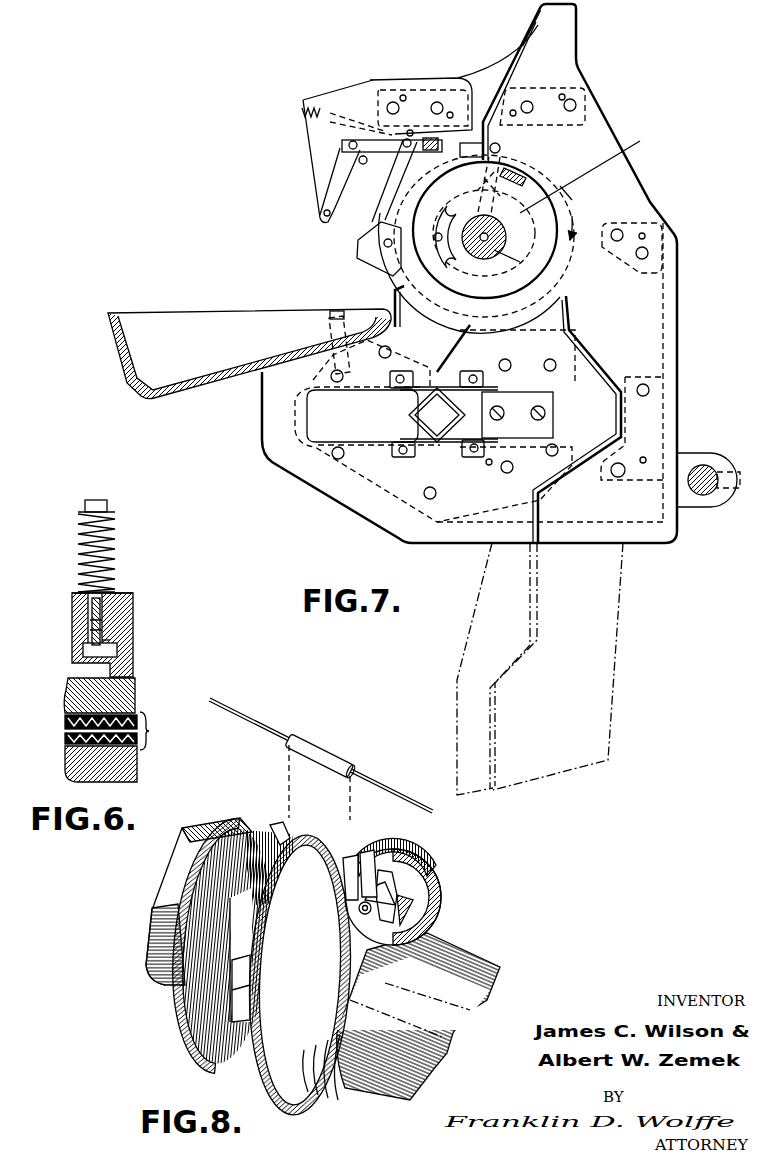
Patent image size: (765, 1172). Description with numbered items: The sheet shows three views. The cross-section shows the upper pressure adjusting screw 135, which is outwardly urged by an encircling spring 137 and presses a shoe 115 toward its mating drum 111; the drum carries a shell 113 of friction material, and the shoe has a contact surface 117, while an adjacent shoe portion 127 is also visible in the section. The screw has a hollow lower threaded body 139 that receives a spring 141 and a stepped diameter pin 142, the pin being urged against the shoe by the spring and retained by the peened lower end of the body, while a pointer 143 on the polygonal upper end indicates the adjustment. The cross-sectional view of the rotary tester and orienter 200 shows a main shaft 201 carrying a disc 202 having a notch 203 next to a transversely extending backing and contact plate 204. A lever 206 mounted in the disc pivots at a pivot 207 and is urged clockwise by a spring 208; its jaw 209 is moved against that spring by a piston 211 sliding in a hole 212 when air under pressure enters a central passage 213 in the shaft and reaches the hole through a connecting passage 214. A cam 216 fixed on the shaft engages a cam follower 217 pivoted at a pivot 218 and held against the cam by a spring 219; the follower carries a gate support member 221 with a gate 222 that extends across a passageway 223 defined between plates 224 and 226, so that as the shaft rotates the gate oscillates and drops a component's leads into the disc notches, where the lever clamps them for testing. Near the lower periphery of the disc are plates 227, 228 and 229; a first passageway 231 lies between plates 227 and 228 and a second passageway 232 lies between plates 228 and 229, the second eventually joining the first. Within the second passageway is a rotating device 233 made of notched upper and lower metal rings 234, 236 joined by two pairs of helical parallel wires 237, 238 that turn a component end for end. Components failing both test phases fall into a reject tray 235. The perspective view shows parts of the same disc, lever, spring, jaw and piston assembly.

In FIG. 6, the drum 111 is at (68, 766).
In FIG. 6, the shell 113 is at (66, 740).
In FIG. 6, the shoe 115 is at (64, 694).
In FIG. 6, the contact surface 117 is at (66, 720).
In FIG. 6, the housing 127 is at (72, 638).
In FIG. 6, the upper pressure adjusting screw 135 is at (70, 563).
In FIG. 6, the spring 137 is at (113, 567).
In FIG. 6, the threaded body 139 is at (102, 622).
In FIG. 6, the spring 141 is at (103, 608).
In FIG. 6, the stepped diameter pin 142 is at (110, 640).
In FIG. 6, the pointer 143 is at (122, 592).
In FIG. 7, the tester and orienter 200 is at (292, 133).
In FIG. 7, the main shaft 201 is at (507, 244).
In FIG. 8, the main shaft 201 is at (183, 860).
In FIG. 7, the disc 202 is at (593, 216).
In FIG. 8, the disc 202 is at (205, 985).
In FIG. 7, the notch 203 is at (490, 134).
In FIG. 8, the notch 203 is at (370, 860).
In FIG. 7, the backing and contact plate 204 is at (440, 136).
In FIG. 8, the backing and contact plate 204 is at (280, 828).
In FIG. 7, the lever 206 is at (497, 163).
In FIG. 8, the lever 206 is at (378, 915).
In FIG. 7, the pivot 207 is at (388, 172).
In FIG. 8, the pivot 207 is at (356, 940).
In FIG. 7, the spring 208 is at (510, 170).
In FIG. 8, the spring 208 is at (427, 923).
In FIG. 7, the jaw 209 is at (502, 118).
In FIG. 8, the jaw 209 is at (392, 878).
In FIG. 7, the piston 211 is at (580, 177).
In FIG. 8, the piston 211 is at (400, 930).
In FIG. 7, the hole 212 is at (566, 192).
In FIG. 7, the central passage 213 is at (520, 262).
In FIG. 7, the connecting passage 214 is at (557, 226).
In FIG. 7, the cam 216 is at (490, 305).
In FIG. 8, the cam 216 is at (240, 1000).
In FIG. 7, the cam follower 217 is at (358, 250).
In FIG. 7, the pivot 218 is at (321, 210).
In FIG. 7, the spring 219 is at (327, 110).
In FIG. 7, the gate support member 221 is at (325, 173).
In FIG. 7, the gate 222 is at (472, 80).
In FIG. 7, the passageway 223 is at (522, 60).
In FIG. 7, the plate 224 is at (513, 60).
In FIG. 7, the plate 226 is at (568, 61).
In FIG. 7, the plate 227 is at (635, 316).
In FIG. 7, the plate 228 is at (608, 413).
In FIG. 7, the plate 229 is at (437, 348).
In FIG. 7, the first passageway 231 is at (577, 326).
In FIG. 7, the second passageway 232 is at (500, 362).
In FIG. 7, the rotating device 233 is at (404, 412).
In FIG. 7, the upper metal ring 234 is at (418, 392).
In FIG. 7, the reject tray 235 is at (242, 312).
In FIG. 7, the lower metal ring 236 is at (414, 438).
In FIG. 7, the parallel wires 237 is at (426, 456).
In FIG. 7, the parallel wires 238 is at (500, 417).